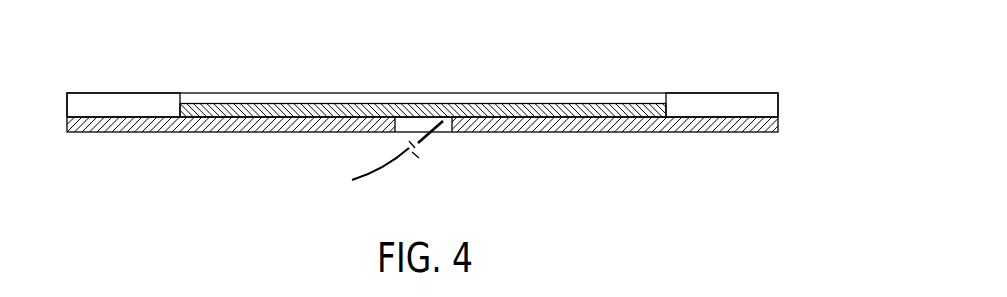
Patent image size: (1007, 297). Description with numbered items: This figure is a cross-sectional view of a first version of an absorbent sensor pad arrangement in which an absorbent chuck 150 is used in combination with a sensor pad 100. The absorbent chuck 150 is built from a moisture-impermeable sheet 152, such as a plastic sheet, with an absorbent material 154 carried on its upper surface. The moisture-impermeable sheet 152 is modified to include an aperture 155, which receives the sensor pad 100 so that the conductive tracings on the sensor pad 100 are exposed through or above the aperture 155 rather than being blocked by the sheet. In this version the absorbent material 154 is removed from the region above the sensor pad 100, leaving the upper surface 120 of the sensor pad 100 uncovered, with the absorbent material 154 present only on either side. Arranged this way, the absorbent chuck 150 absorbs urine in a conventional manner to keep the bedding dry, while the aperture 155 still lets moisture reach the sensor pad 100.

The sensor pad 100 is at (470, 104).
The upper surface 120 is at (259, 93).
The absorbent chuck 150 is at (795, 102).
The moisture-impermeable sheet 152 is at (715, 131).
The absorbent material 154 is at (117, 92).
The aperture 155 is at (437, 138).